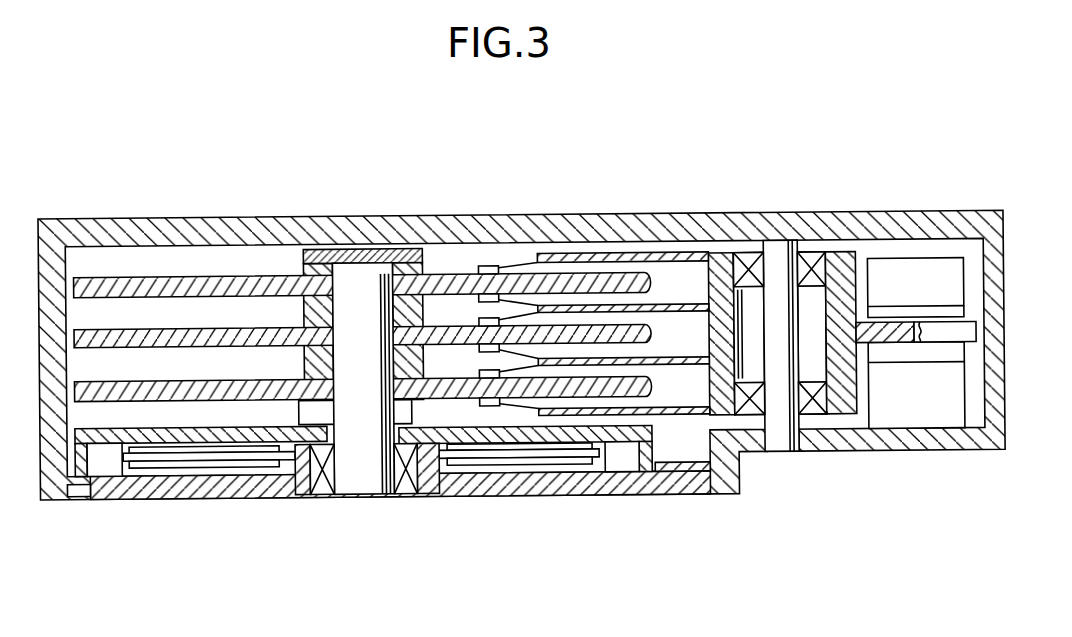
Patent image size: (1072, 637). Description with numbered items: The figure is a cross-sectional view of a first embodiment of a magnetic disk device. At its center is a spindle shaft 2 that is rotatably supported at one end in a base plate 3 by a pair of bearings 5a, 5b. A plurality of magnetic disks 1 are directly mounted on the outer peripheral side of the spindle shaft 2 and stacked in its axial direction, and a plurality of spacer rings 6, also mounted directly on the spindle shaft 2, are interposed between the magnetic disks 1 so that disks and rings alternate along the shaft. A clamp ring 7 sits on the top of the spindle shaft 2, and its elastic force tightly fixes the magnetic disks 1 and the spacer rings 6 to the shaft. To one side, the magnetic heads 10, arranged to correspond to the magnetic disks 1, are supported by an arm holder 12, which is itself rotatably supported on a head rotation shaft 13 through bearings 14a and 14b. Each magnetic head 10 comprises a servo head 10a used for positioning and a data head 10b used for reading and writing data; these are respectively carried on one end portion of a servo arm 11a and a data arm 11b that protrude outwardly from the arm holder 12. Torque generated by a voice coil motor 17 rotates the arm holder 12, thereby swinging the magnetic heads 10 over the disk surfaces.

The magnetic disk 1 is at (117, 279).
The spindle shaft 2 is at (347, 494).
The base plate 3 is at (104, 500).
The bearing 5a is at (403, 500).
The bearing 5b is at (306, 450).
The spacer ring 6 is at (303, 321).
The clamp ring 7 is at (343, 254).
The magnetic head 10 is at (494, 413).
The servo head 10a is at (480, 369).
The data head 10b is at (485, 401).
The servo arm 11a is at (636, 258).
The data arm 11b is at (673, 424).
The arm holder 12 is at (853, 231).
The head rotation shaft 13 is at (778, 460).
The bearing 14a is at (812, 260).
The bearing 14b is at (826, 422).
The voice coil motor 17 is at (978, 342).